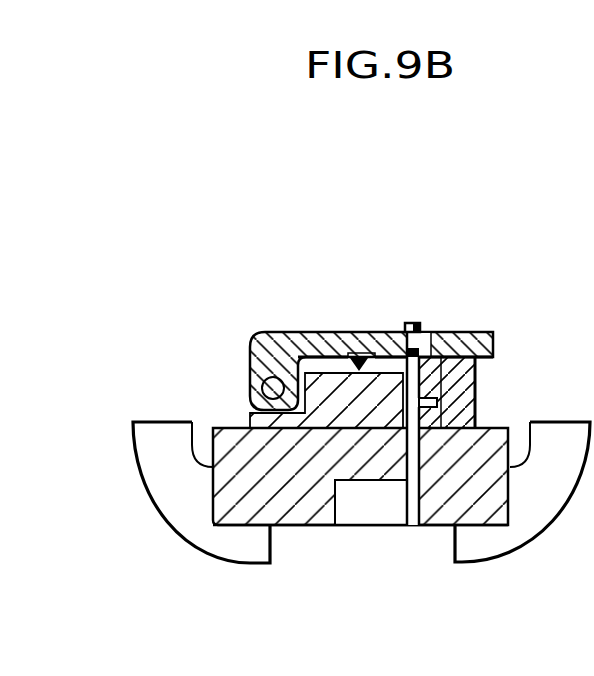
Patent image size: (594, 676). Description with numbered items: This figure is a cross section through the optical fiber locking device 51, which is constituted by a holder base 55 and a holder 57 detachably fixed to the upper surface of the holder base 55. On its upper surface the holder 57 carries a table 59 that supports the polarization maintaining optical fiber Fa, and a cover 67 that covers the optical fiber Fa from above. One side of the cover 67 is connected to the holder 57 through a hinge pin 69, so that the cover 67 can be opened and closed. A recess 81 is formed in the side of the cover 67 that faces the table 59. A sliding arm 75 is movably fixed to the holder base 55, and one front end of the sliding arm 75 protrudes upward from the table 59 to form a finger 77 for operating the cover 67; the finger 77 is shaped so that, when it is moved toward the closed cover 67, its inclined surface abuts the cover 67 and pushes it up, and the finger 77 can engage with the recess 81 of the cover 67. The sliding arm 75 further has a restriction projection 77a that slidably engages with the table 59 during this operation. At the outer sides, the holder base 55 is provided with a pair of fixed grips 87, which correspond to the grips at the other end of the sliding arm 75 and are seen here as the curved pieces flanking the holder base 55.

The optical fiber locking device 51 is at (434, 239).
The holder base 55 is at (295, 518).
The holder 57 is at (477, 397).
The table 59 is at (330, 331).
The cover 67 is at (282, 330).
The hinge pin 69 is at (261, 383).
The sliding arm 75 is at (371, 532).
The finger 77 is at (437, 331).
The restriction projection 77a is at (483, 358).
The recess 81 is at (410, 322).
The fixed grips 87 is at (170, 518).
The polarization maintaining optical fiber Fa is at (363, 331).